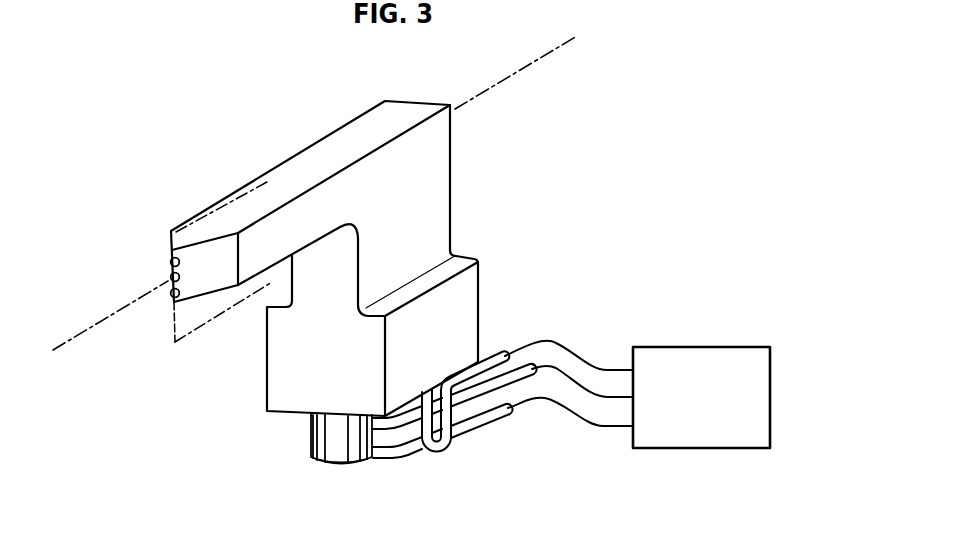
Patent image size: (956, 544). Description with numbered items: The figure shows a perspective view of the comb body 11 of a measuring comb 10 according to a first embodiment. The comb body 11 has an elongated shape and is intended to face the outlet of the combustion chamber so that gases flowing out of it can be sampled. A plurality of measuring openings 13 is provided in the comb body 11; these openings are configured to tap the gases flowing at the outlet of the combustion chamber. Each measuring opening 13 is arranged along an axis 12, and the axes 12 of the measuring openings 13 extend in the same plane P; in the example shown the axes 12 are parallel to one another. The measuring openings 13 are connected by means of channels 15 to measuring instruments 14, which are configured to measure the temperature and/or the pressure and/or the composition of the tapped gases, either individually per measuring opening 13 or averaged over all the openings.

The measuring comb 10 is at (273, 128).
The comb body 11 is at (352, 137).
The axis 12 is at (112, 315).
The measuring opening 13 is at (172, 277).
The measuring instruments 14 is at (752, 397).
The channels 15 is at (508, 376).
The plane P is at (236, 195).